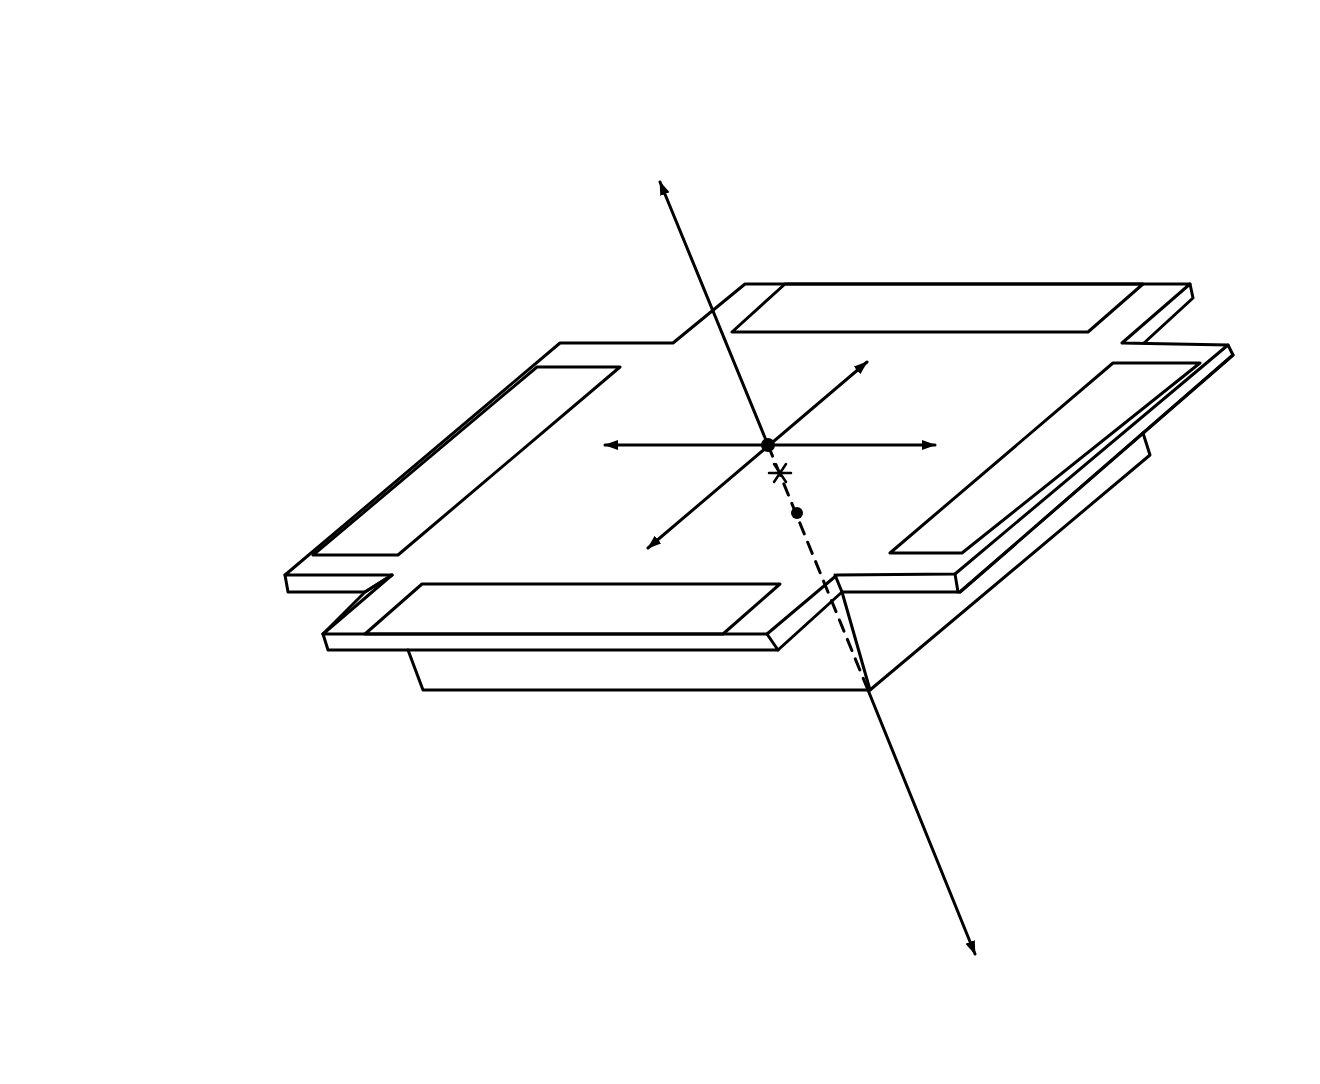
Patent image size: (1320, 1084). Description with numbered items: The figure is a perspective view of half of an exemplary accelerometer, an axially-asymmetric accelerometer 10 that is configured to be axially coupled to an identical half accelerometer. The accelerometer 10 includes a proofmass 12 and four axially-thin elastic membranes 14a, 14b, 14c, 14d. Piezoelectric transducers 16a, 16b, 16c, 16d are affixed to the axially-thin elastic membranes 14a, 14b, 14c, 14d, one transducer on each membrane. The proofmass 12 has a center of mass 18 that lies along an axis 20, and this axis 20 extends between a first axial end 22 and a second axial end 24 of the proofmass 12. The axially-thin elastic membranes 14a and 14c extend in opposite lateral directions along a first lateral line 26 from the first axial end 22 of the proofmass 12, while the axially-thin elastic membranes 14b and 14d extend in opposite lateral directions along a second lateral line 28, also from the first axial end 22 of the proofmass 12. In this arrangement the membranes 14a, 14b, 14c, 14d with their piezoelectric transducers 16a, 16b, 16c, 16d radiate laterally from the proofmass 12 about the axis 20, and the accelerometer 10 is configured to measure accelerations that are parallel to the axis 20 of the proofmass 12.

The axially-asymmetric accelerometer 10 is at (530, 146).
The proofmass 12 is at (1043, 530).
The axially-thin elastic membrane 14a is at (287, 600).
The axially-thin elastic membrane 14b is at (363, 658).
The axially-thin elastic membrane 14c is at (943, 605).
The axially-thin elastic membrane 14d is at (1190, 284).
The piezoelectric transducer 16a is at (470, 457).
The piezoelectric transducer 16b is at (717, 612).
The piezoelectric transducer 16c is at (1098, 423).
The piezoelectric transducer 16d is at (877, 305).
The center of mass 18 is at (792, 474).
The axis 20 is at (690, 247).
The first axial end 22 is at (708, 553).
The second axial end 24 is at (708, 705).
The first lateral line 26 is at (679, 445).
The second lateral line 28 is at (810, 408).